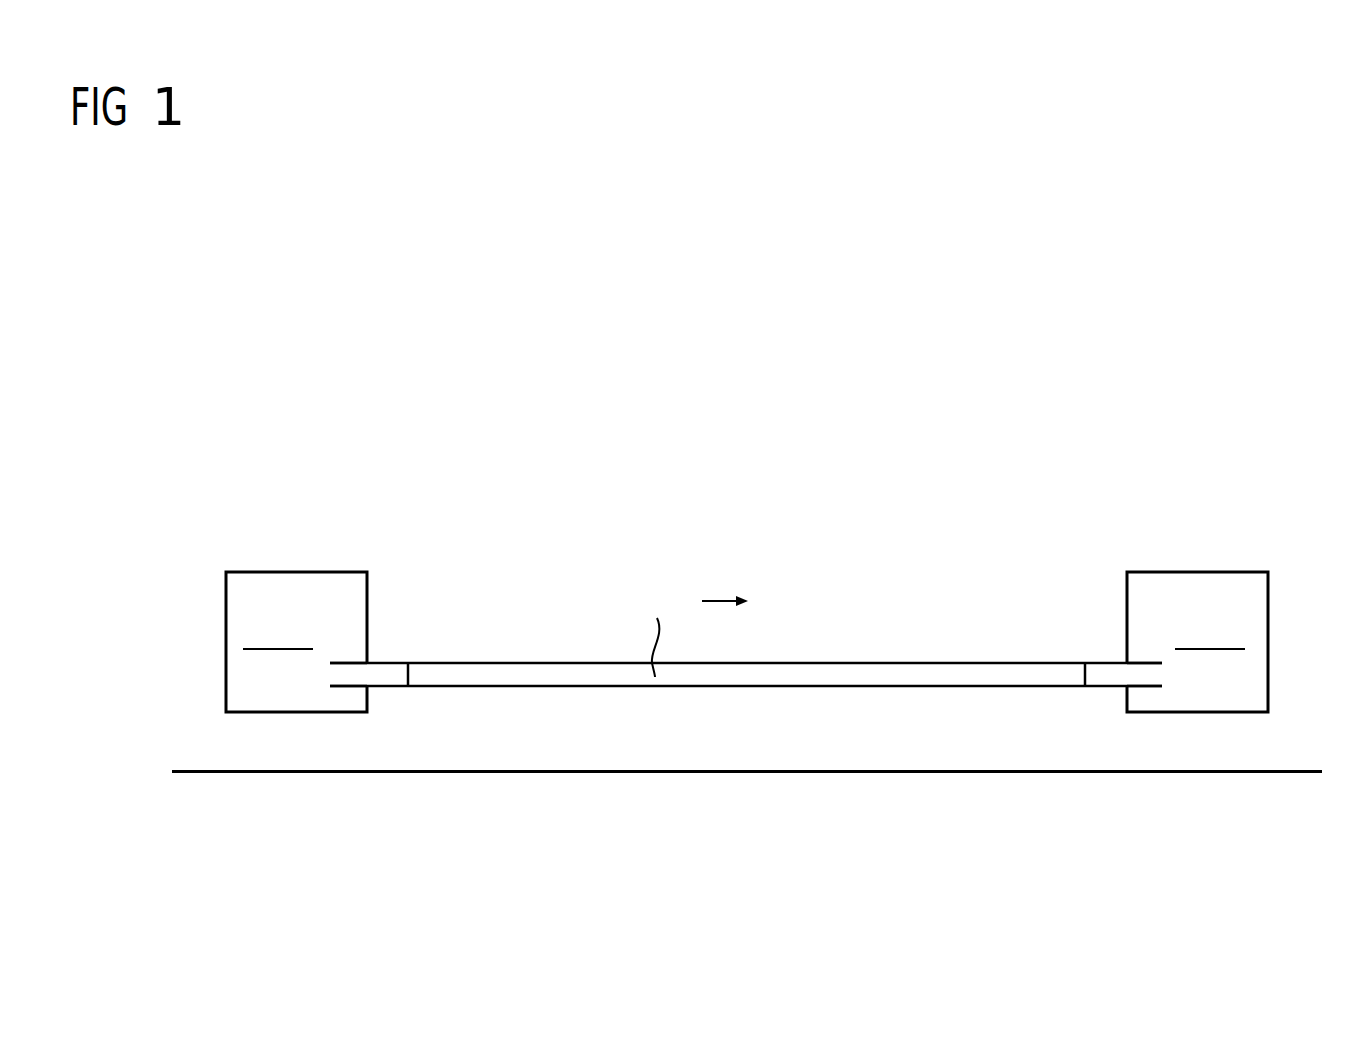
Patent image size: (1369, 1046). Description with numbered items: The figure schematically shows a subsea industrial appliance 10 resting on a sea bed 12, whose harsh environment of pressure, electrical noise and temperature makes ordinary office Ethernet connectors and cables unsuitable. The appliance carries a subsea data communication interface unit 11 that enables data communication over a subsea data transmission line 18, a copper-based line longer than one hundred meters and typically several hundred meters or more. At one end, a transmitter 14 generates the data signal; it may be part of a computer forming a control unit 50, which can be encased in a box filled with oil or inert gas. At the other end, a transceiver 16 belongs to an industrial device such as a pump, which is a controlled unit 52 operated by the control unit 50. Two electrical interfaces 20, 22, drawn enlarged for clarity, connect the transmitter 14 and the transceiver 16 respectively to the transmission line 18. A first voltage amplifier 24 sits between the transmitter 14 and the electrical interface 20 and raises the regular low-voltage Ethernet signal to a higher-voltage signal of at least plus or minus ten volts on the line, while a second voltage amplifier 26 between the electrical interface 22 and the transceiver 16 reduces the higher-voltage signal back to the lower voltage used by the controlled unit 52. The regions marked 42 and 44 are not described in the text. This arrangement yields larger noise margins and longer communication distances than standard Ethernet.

The subsea industrial appliance 10 is at (708, 435).
The subsea data communication interface unit 11 is at (772, 497).
The sea bed 12 is at (216, 770).
The transmitter 14 is at (296, 704).
The transceiver 16 is at (1197, 704).
The subsea data transmission line 18 is at (535, 677).
The electrical interface 20 is at (392, 675).
The electrical interface 22 is at (1106, 677).
The first voltage amplifier 24 is at (348, 675).
The second voltage amplifier 26 is at (1146, 675).
The first region 42 is at (412, 363).
The second region 44 is at (1070, 363).
The control unit 50 is at (303, 675).
The controlled unit 52 is at (1193, 677).